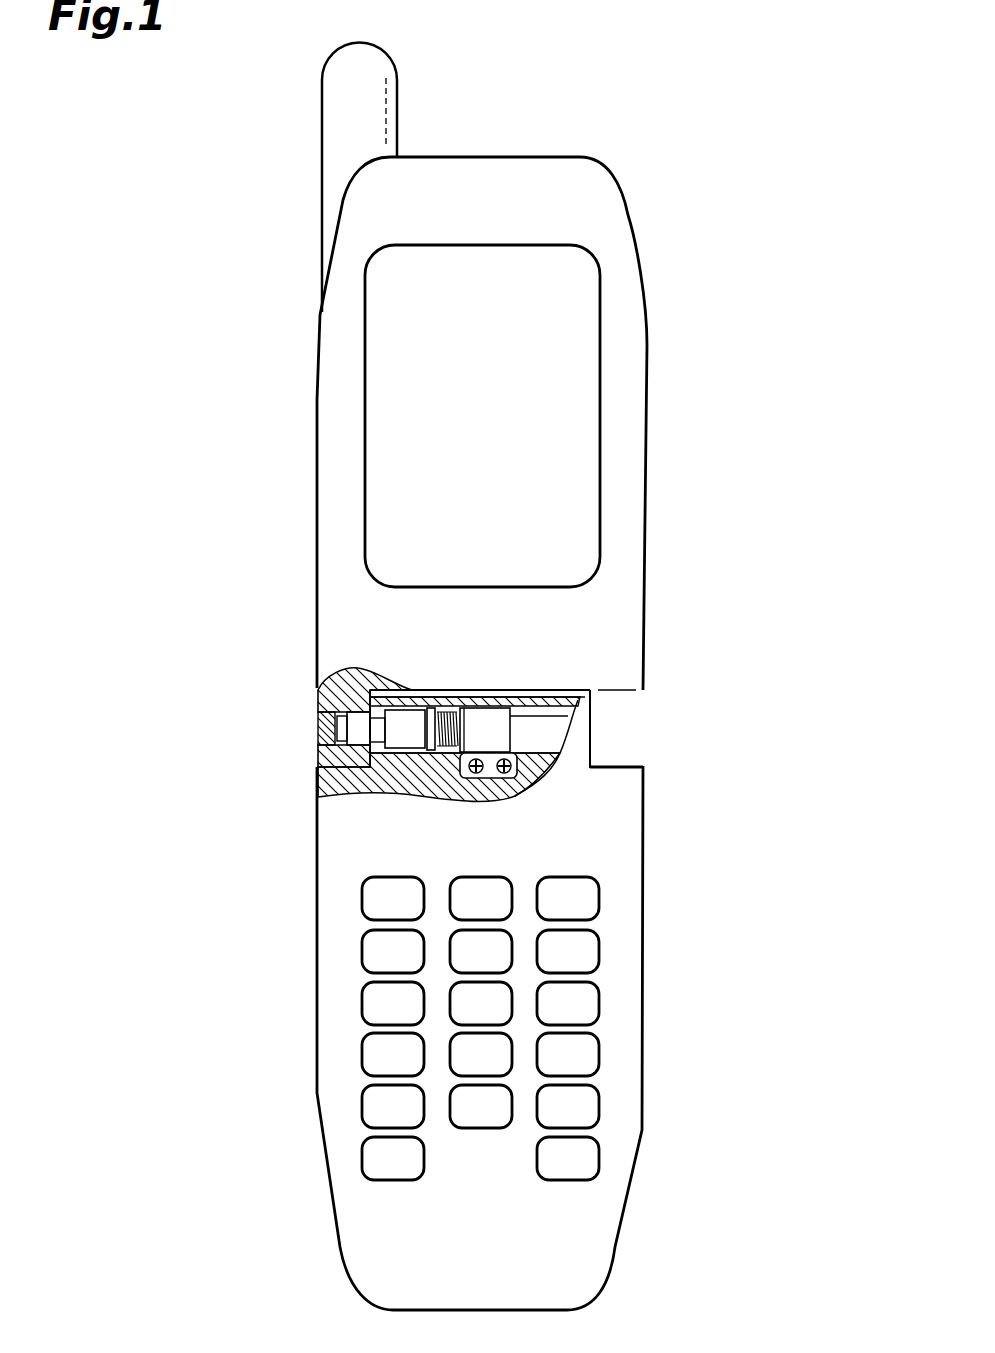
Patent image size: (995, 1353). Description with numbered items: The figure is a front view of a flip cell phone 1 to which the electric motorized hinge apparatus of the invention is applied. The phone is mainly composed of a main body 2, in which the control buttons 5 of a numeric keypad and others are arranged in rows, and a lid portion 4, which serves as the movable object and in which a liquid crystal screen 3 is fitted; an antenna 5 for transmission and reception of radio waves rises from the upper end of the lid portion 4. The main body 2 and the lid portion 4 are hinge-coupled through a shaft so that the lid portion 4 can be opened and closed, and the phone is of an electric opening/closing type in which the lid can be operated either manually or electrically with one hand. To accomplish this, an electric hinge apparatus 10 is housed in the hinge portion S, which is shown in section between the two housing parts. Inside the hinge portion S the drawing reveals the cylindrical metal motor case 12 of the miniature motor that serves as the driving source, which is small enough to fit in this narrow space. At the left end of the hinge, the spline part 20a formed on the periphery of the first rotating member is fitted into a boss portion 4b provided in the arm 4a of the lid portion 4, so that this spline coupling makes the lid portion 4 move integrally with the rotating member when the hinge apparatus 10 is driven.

The flip cell phone 1 is at (686, 210).
The main body 2 is at (622, 965).
The liquid crystal screen 3 is at (491, 413).
The lid portion 4 is at (630, 601).
The arm 4a is at (333, 702).
The boss portion 4b is at (317, 775).
The control buttons / antenna 5 is at (377, 118).
The electric hinge apparatus 10 is at (530, 703).
The motor case 12 is at (537, 735).
The spline part 20a is at (360, 735).
The hinge portion S is at (665, 737).